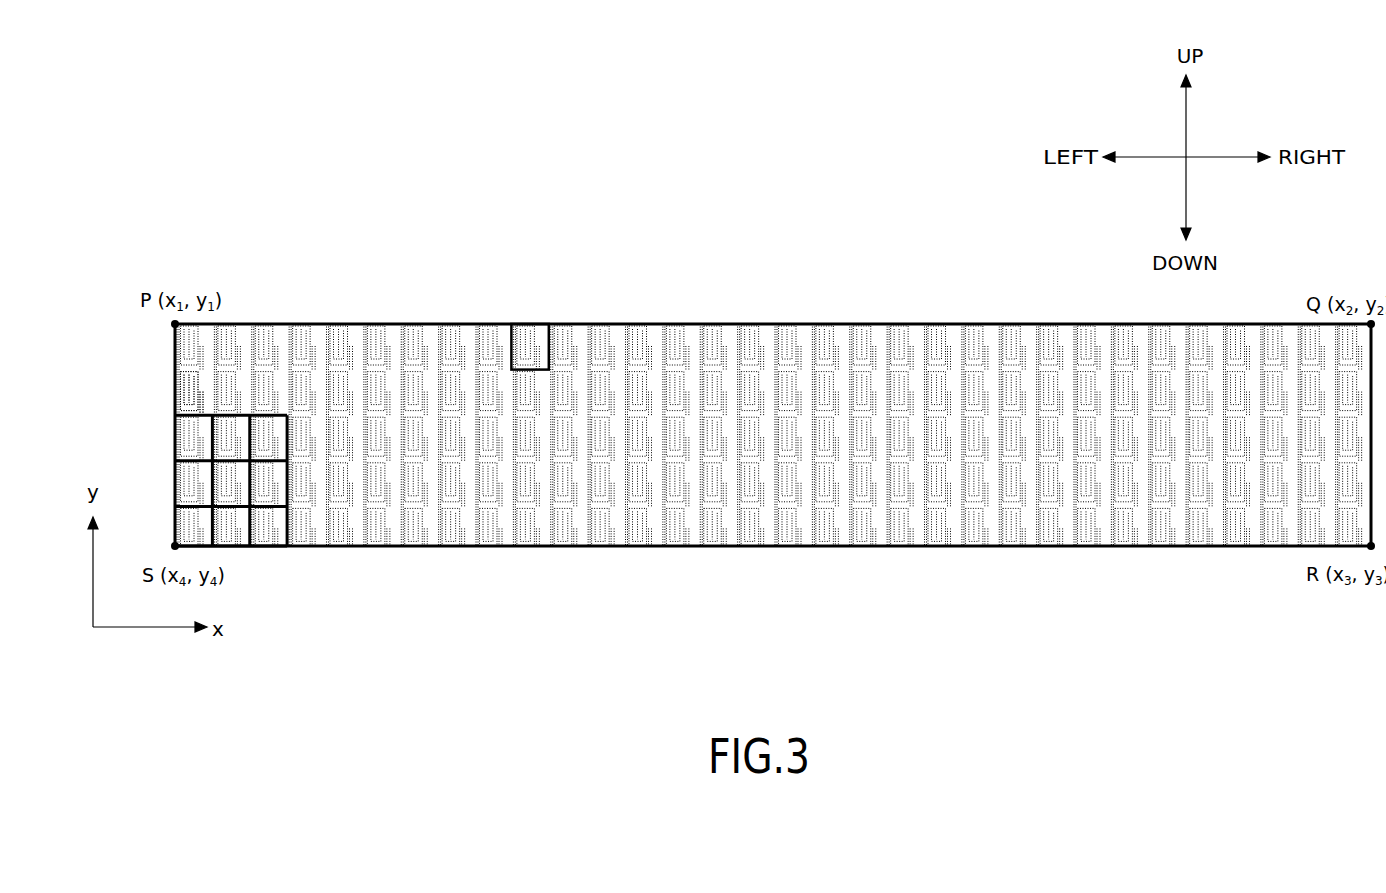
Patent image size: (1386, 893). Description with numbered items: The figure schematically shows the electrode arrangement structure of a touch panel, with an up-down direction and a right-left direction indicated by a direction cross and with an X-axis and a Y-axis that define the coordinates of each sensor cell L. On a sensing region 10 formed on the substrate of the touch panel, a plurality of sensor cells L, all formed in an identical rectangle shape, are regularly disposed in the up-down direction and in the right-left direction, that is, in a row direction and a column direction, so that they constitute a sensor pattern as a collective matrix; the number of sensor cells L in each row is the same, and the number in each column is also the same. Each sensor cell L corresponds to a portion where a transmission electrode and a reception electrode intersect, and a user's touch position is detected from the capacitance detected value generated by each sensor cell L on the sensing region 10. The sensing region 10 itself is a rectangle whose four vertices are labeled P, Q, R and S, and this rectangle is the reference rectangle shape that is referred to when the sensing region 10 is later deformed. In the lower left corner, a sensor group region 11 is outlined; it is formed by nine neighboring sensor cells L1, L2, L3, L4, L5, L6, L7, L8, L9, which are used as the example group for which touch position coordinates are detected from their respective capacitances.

The sensing region 10 is at (430, 322).
The sensor group region 11 is at (197, 410).
The sensor cell L is at (523, 320).
The sensor cell L1 is at (172, 425).
The sensor cell L2 is at (233, 362).
The sensor cell L3 is at (277, 415).
The sensor cell L4 is at (170, 477).
The sensor cell L5 is at (270, 548).
The sensor cell L6 is at (287, 482).
The sensor cell L7 is at (170, 528).
The sensor cell L8 is at (232, 546).
The sensor cell L9 is at (253, 492).